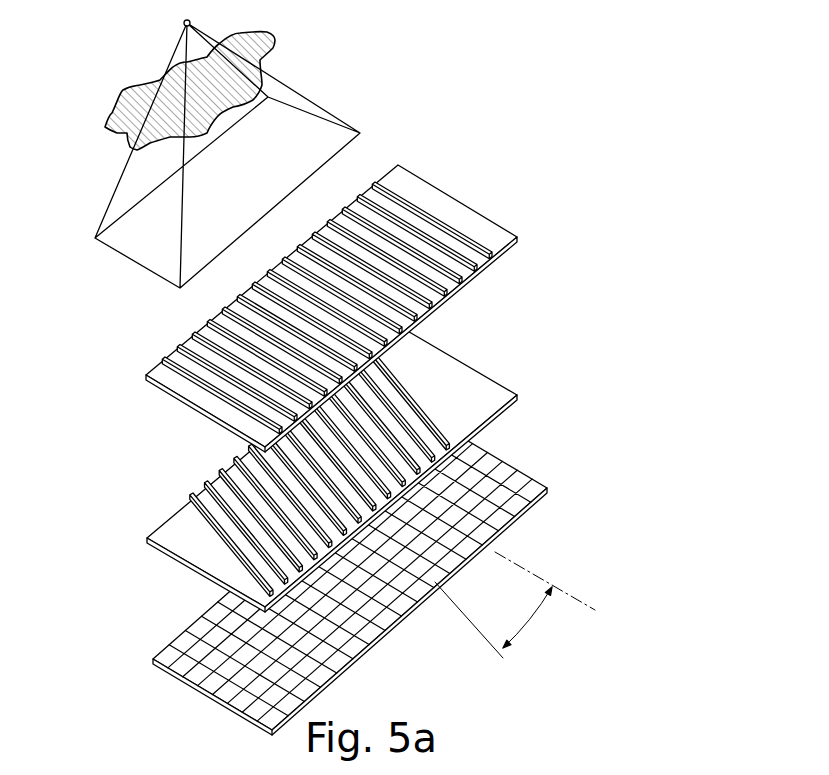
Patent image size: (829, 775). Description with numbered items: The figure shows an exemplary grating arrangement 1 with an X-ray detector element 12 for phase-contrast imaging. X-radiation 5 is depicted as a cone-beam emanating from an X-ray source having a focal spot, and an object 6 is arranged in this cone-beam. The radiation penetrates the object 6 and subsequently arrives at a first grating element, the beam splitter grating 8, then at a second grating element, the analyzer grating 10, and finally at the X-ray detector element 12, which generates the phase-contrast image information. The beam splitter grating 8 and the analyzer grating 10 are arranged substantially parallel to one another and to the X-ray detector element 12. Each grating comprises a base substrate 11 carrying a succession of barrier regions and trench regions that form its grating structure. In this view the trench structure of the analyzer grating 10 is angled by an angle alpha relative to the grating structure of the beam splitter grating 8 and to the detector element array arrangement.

The X-ray imaging apparatus 1 is at (371, 377).
The X-radiation 5 is at (309, 134).
The object 6 is at (138, 115).
The beam splitter grating 8 is at (298, 300).
The analyzer grating 10 is at (307, 468).
The X-ray detector element 12 is at (492, 502).
The base substrate 11 is at (197, 413).